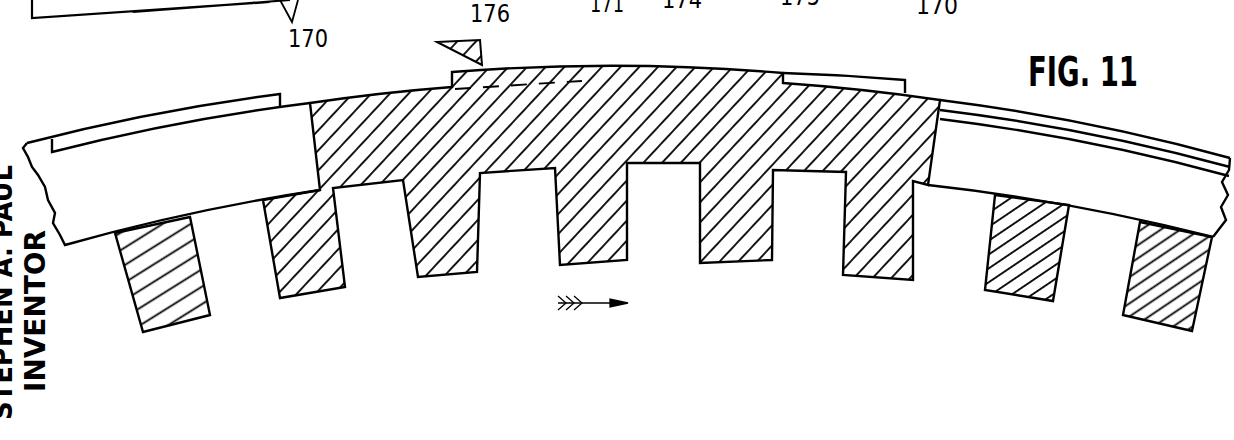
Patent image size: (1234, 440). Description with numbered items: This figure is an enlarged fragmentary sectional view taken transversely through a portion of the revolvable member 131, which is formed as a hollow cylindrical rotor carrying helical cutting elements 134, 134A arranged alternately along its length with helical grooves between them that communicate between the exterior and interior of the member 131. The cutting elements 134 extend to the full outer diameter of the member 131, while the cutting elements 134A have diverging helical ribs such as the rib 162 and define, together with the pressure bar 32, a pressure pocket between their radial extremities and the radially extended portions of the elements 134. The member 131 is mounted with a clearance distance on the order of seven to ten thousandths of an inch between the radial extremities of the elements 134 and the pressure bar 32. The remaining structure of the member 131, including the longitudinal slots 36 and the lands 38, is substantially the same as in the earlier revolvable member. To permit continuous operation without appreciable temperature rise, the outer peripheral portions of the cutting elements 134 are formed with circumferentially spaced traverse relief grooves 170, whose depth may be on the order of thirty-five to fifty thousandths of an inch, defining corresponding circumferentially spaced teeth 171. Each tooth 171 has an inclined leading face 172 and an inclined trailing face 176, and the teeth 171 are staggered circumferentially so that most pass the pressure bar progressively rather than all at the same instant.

The helical cutting element 134 is at (602, 108).
The helical cutting element 134A is at (957, 187).
The traverse relief groove 170 is at (195, 119).
The tooth 171 is at (157, 113).
The inclined leading face 172 is at (227, 105).
The inclined trailing face 176 is at (530, 73).
The pressure bar 32 is at (480, 46).
The helical rib 162 is at (988, 112).
The revolvable member 131 is at (1150, 122).
The land 38 is at (480, 277).
The longitudinal slot 36 is at (677, 252).